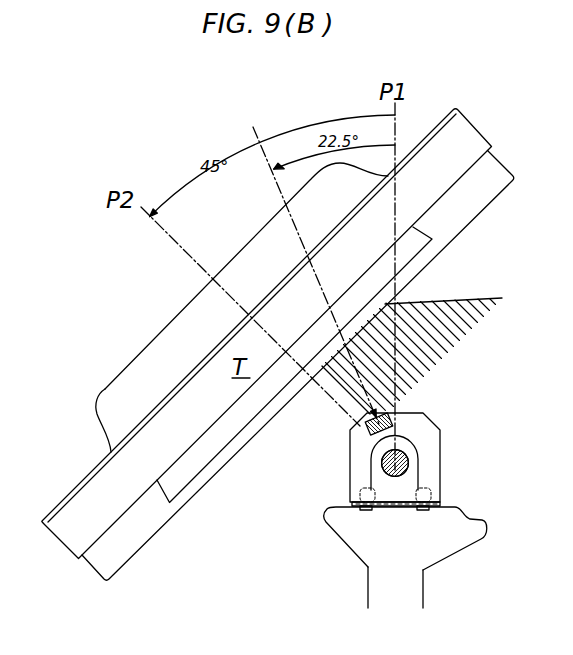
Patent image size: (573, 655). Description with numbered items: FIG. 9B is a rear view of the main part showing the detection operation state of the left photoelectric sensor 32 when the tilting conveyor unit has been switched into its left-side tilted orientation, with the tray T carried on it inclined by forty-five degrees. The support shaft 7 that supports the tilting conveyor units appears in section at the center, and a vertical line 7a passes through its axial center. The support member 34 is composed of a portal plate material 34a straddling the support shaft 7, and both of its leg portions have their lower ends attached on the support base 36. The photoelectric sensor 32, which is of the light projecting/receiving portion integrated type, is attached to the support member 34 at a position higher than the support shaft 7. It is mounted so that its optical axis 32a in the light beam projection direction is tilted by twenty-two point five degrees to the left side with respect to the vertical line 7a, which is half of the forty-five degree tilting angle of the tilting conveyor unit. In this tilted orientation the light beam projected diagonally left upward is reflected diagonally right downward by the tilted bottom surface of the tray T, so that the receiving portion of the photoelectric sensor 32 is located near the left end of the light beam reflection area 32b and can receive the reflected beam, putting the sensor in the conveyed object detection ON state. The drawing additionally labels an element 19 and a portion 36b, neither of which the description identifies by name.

The support shaft 7 is at (398, 455).
The vertical line 7a is at (391, 286).
The shaft pin 19 is at (414, 465).
The left photoelectric sensor 32 is at (393, 424).
The optical axis 32a is at (301, 262).
The light beam reflection area 32b is at (448, 361).
The support member 34 is at (341, 445).
The portal plate material 34a is at (362, 455).
The support base 36 is at (391, 496).
The base leg 36b is at (407, 585).